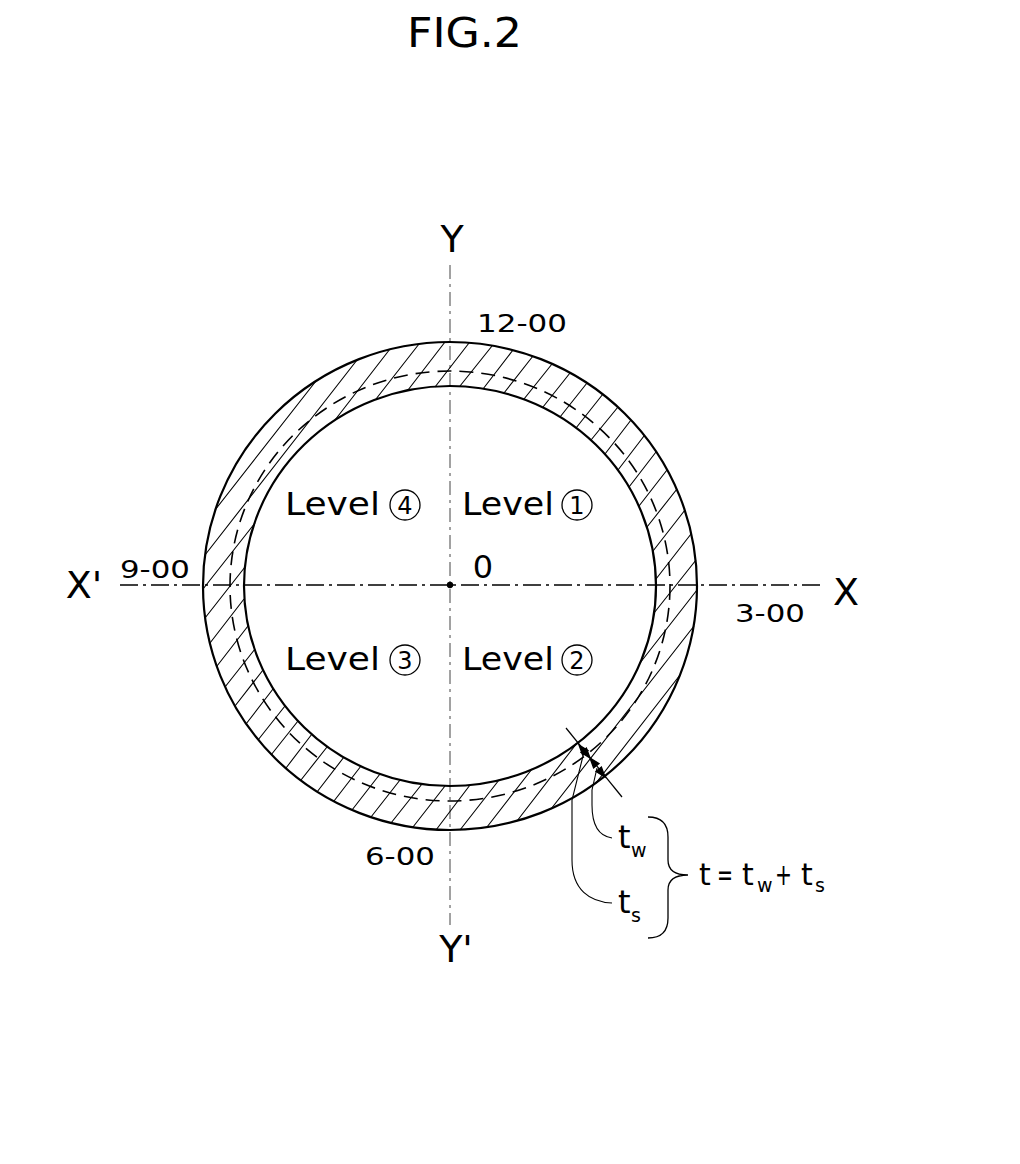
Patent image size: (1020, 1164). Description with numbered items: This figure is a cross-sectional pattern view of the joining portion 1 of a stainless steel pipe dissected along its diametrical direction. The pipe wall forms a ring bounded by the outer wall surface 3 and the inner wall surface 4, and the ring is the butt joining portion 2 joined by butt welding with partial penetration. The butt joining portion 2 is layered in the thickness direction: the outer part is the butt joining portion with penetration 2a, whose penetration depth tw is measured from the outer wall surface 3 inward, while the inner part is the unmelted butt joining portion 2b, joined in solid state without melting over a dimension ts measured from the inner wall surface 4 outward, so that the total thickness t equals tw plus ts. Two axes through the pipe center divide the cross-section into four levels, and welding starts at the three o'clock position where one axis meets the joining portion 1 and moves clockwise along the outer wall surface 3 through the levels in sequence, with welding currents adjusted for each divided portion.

The joining portion 1 is at (685, 403).
The butt joining portion 2 is at (117, 748).
The butt joining portion with penetration 2a is at (288, 764).
The unmelted butt joining portion 2b is at (333, 762).
The outer wall surface 3 is at (691, 531).
The inner wall surface 4 is at (641, 511).